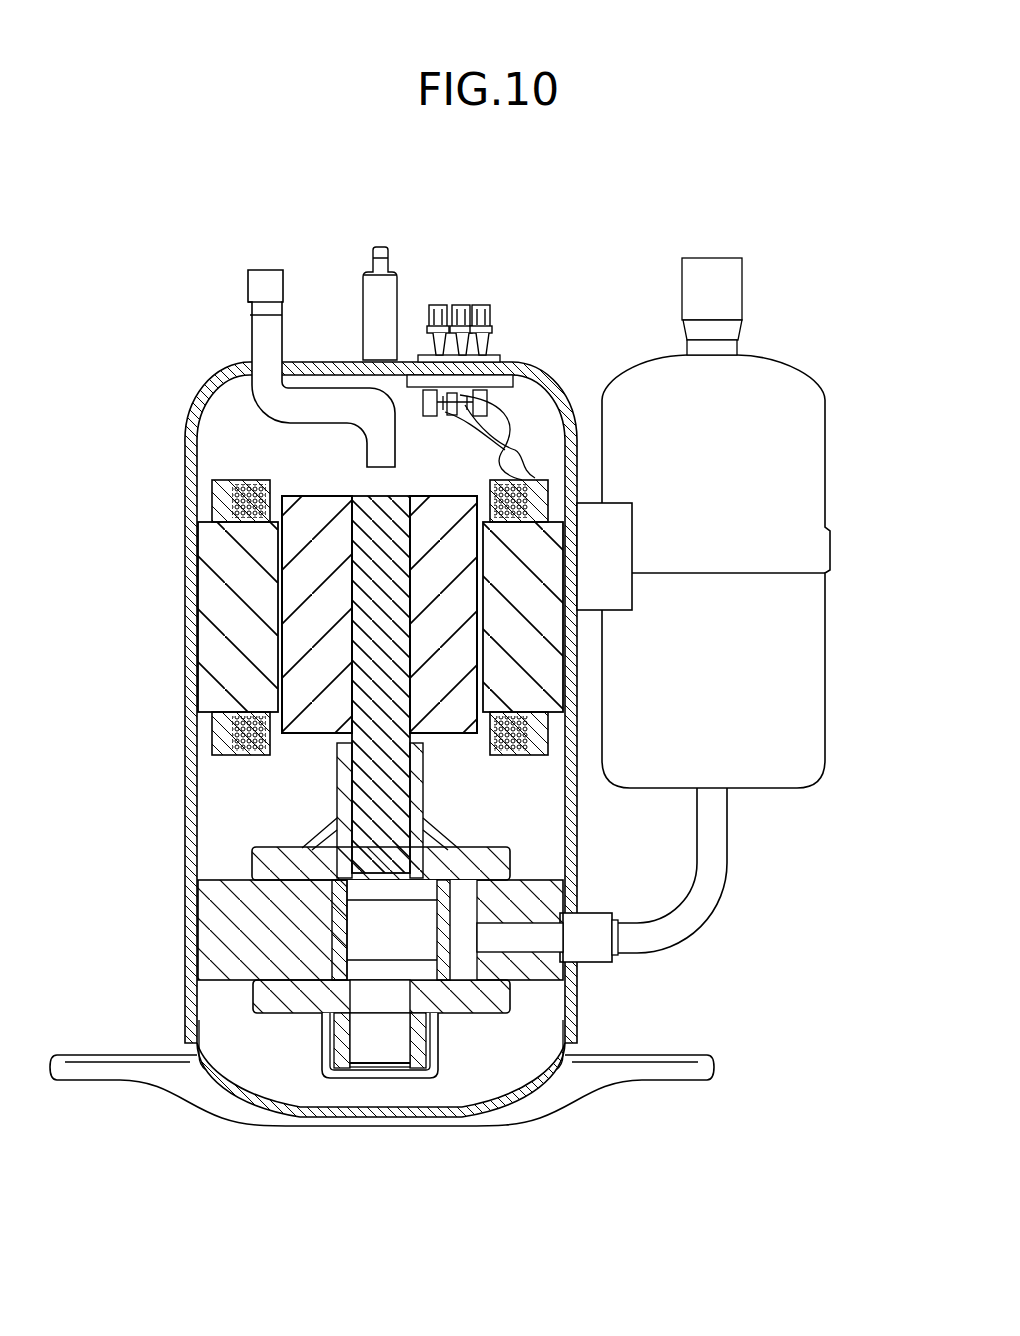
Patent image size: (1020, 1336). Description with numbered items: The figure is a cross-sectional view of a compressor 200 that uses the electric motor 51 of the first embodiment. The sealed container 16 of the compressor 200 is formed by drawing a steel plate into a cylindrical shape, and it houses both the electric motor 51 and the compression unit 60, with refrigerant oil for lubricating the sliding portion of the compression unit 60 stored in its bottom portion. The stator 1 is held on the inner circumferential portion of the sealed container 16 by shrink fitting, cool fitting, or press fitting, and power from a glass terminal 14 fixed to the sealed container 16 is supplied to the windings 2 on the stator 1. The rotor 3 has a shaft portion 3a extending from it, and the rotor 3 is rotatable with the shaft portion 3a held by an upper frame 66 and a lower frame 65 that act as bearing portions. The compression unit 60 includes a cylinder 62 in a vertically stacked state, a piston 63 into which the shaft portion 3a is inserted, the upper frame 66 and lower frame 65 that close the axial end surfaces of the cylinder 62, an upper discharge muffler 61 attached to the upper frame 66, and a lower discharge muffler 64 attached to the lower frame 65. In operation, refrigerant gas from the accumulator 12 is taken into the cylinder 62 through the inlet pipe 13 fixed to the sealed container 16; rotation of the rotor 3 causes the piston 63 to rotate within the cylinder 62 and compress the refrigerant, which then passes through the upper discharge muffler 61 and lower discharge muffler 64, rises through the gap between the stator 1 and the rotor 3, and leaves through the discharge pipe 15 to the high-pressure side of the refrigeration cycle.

The compressor 200 is at (804, 238).
The glass terminal 14 is at (466, 305).
The discharge pipe 15 is at (248, 328).
The sealed container 16 is at (198, 388).
The accumulator 12 is at (826, 495).
The inlet pipe 13 is at (708, 917).
The electric motor 51 is at (722, 637).
The stator 1 is at (546, 722).
The windings 2 is at (546, 737).
The rotor 3 is at (428, 657).
The shaft portion 3a is at (372, 773).
The compression unit 60 is at (236, 1018).
The upper discharge muffler 61 is at (317, 833).
The cylinder 62 is at (220, 880).
The piston 63 is at (338, 933).
The lower discharge muffler 64 is at (322, 1072).
The lower frame 65 is at (462, 1000).
The upper frame 66 is at (500, 863).